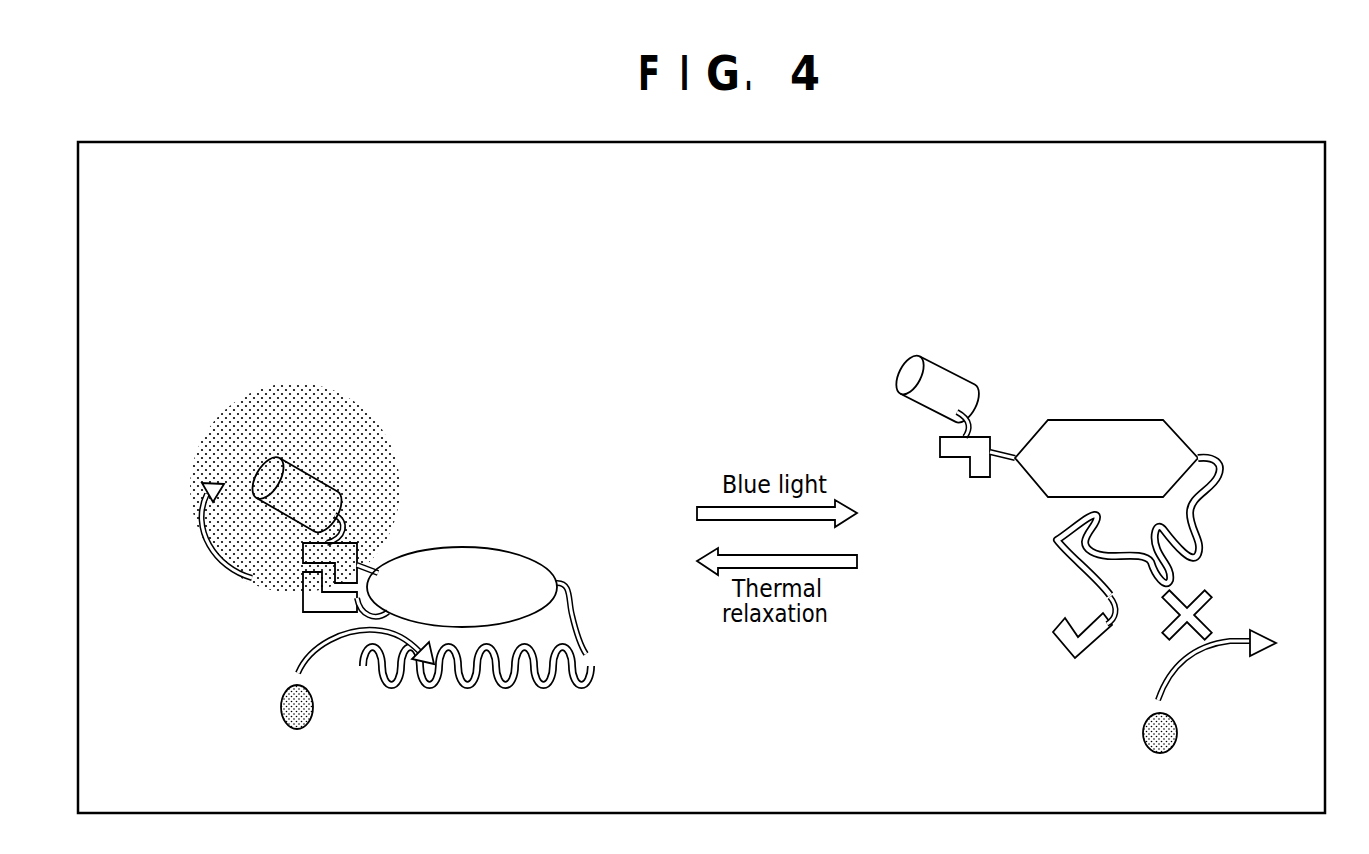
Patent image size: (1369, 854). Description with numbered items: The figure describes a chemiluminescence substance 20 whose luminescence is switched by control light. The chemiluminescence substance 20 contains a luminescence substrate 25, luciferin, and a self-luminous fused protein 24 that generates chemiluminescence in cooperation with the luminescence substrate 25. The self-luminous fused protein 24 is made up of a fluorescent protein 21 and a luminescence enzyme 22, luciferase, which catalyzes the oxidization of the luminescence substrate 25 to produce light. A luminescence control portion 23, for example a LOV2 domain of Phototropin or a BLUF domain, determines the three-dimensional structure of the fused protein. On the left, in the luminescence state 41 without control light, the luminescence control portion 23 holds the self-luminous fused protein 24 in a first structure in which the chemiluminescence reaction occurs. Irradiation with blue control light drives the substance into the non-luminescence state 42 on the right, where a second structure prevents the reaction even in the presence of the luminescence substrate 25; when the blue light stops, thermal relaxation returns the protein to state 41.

The chemiluminescence substance 20 is at (656, 424).
The fluorescent protein 21 is at (313, 475).
The luminescence enzyme 22 is at (350, 542).
The luminescence control portion 23 is at (493, 560).
The self-luminous fused protein 24 is at (489, 401).
The luminescence substrate 25 is at (314, 714).
The state 41 is at (240, 302).
The state 42 is at (907, 302).